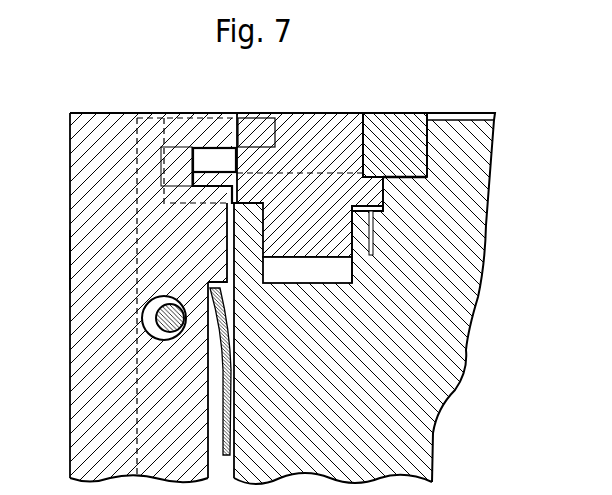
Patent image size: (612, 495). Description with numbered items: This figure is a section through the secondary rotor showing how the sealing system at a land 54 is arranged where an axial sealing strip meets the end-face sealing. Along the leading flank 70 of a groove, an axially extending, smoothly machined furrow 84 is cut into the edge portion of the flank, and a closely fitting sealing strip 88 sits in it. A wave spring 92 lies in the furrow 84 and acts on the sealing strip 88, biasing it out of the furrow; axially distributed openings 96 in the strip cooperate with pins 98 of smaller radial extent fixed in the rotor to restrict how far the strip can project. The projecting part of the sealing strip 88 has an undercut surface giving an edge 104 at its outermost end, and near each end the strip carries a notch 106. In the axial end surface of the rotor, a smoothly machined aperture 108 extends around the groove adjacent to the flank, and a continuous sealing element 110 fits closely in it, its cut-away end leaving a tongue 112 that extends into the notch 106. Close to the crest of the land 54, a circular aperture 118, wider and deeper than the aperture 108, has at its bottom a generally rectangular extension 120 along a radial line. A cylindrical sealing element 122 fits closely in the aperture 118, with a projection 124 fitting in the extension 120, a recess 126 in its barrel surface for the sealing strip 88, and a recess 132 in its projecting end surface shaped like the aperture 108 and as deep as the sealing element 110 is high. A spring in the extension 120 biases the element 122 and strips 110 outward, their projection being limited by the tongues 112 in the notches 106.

The land 54 is at (470, 157).
The leading flank 70 is at (137, 394).
The furrow 84 is at (213, 438).
The sealing strip 88 is at (95, 187).
The wave spring 92 is at (230, 378).
The openings 96 is at (145, 318).
The pins 98 is at (160, 341).
The edge 104 is at (78, 263).
The notch 106 is at (208, 183).
The apertures 108 is at (412, 179).
The sealing element 110 is at (403, 118).
The tongue 112 is at (241, 122).
The aperture 118 is at (372, 252).
The extension 120 is at (317, 272).
The sealing element 122 is at (384, 184).
The projection 124 is at (353, 288).
The recess 126 is at (232, 157).
The recess 132 is at (378, 143).